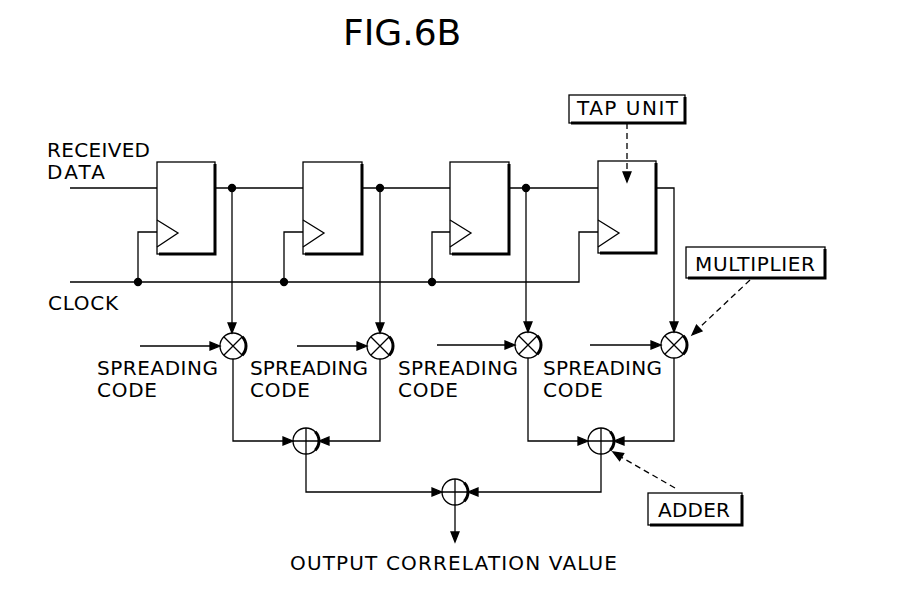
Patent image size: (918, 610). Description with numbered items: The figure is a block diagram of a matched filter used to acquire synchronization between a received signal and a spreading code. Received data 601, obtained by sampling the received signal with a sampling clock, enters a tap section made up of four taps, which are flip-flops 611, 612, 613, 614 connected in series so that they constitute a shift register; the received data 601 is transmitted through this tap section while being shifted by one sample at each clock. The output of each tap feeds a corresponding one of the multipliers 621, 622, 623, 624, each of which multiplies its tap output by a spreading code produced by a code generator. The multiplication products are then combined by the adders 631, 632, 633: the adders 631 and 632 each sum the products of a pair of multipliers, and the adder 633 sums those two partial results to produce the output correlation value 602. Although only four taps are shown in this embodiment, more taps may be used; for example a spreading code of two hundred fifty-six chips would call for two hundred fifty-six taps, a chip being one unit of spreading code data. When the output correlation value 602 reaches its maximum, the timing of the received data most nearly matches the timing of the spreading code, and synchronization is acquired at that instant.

The received data 601 is at (92, 190).
The output correlation value 602 is at (456, 513).
The tap (flip-flop) 611 is at (185, 162).
The tap (flip-flop) 612 is at (332, 162).
The tap (flip-flop) 613 is at (480, 162).
The tap (flip-flop) 614 is at (656, 168).
The multiplier 621 is at (244, 340).
The multiplier 622 is at (391, 340).
The multiplier 623 is at (539, 340).
The multiplier 624 is at (687, 352).
The adder 631 is at (298, 451).
The adder 632 is at (592, 450).
The adder 633 is at (460, 479).